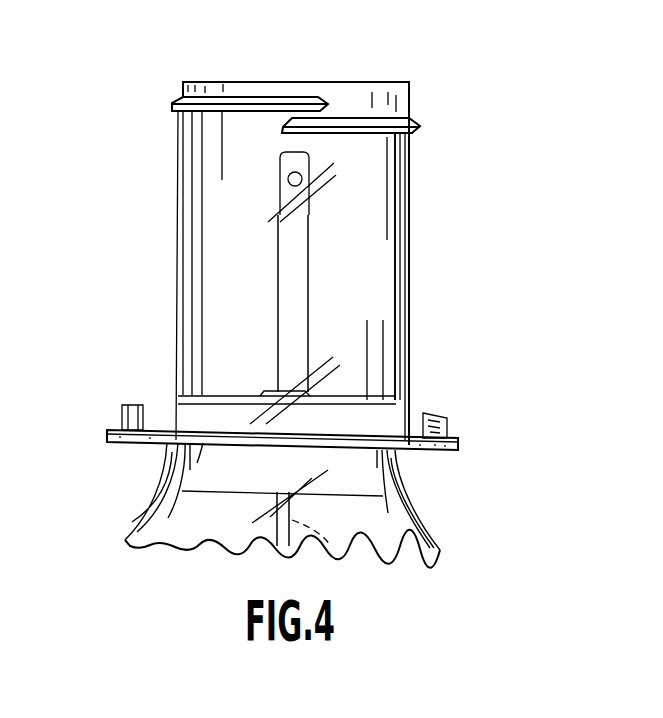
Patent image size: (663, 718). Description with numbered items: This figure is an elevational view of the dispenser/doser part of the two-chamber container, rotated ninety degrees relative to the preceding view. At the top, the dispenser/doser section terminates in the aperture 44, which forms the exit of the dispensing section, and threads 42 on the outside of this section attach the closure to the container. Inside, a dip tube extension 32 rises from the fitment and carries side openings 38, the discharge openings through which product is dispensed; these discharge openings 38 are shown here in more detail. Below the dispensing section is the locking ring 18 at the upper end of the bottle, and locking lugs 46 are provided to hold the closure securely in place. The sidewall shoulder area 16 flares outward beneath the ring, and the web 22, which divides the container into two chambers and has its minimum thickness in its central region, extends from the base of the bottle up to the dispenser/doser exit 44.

The aperture 44 is at (382, 84).
The threads 42 is at (420, 127).
The side openings 38 is at (318, 165).
The dip tube extension 32 is at (310, 310).
The locking ring 18 is at (456, 450).
The lugs 46 is at (122, 413).
The sidewall shoulder area 16 is at (162, 470).
The web 22 is at (338, 549).